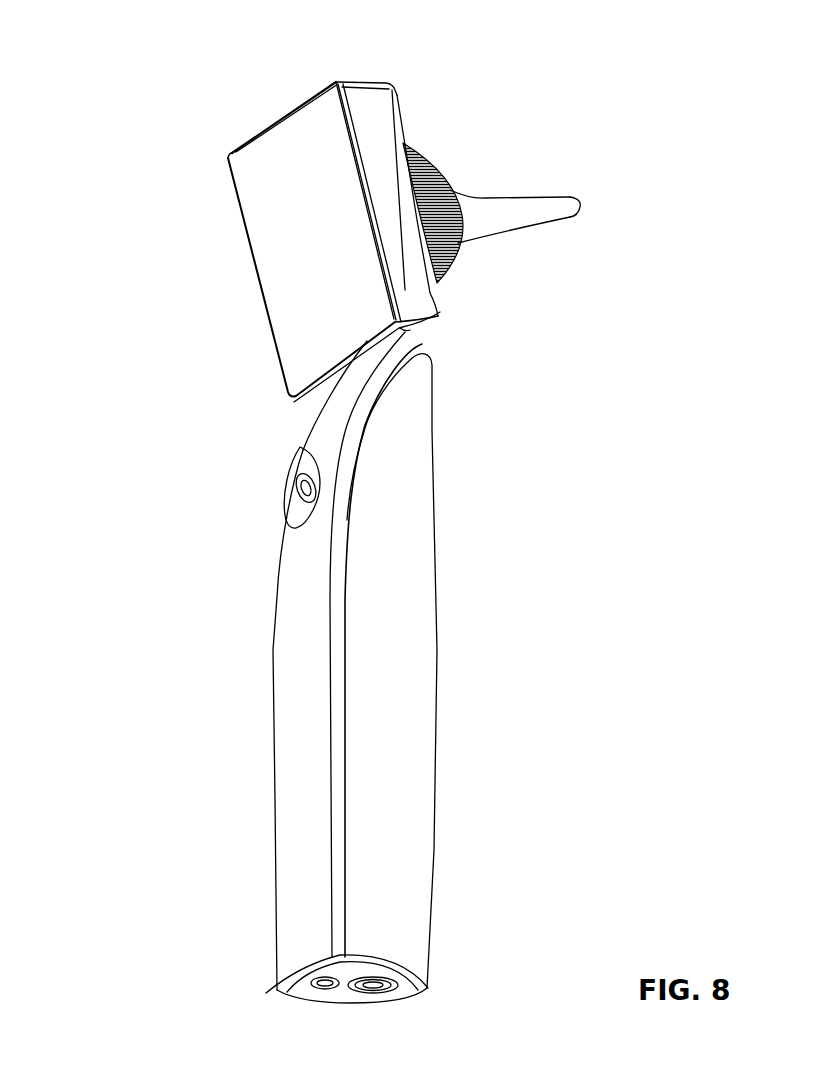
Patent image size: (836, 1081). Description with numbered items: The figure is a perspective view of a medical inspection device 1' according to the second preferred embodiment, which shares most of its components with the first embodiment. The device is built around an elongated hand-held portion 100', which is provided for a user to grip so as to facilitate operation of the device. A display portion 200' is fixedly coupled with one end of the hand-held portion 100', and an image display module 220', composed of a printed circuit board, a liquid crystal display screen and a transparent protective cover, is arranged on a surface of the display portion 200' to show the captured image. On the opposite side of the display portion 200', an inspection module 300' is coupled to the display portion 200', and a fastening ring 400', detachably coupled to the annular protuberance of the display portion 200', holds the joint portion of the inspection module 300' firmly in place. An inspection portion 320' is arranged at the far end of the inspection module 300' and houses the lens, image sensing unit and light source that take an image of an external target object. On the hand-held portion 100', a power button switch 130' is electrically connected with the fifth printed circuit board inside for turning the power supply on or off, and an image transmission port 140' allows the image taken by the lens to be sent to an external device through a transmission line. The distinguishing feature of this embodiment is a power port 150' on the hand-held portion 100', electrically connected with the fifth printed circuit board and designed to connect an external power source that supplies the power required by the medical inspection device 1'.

The medical inspection device 1' is at (340, 529).
The hand-held portion 100' is at (301, 679).
The power button switch 130' is at (248, 476).
The image transmission port 140' is at (419, 998).
The power port 150' is at (275, 1002).
The display portion 200' is at (336, 217).
The image display module 220' is at (307, 214).
The inspection module 300' is at (547, 211).
The inspection portion 320' is at (607, 172).
The fastening ring 400' is at (471, 168).